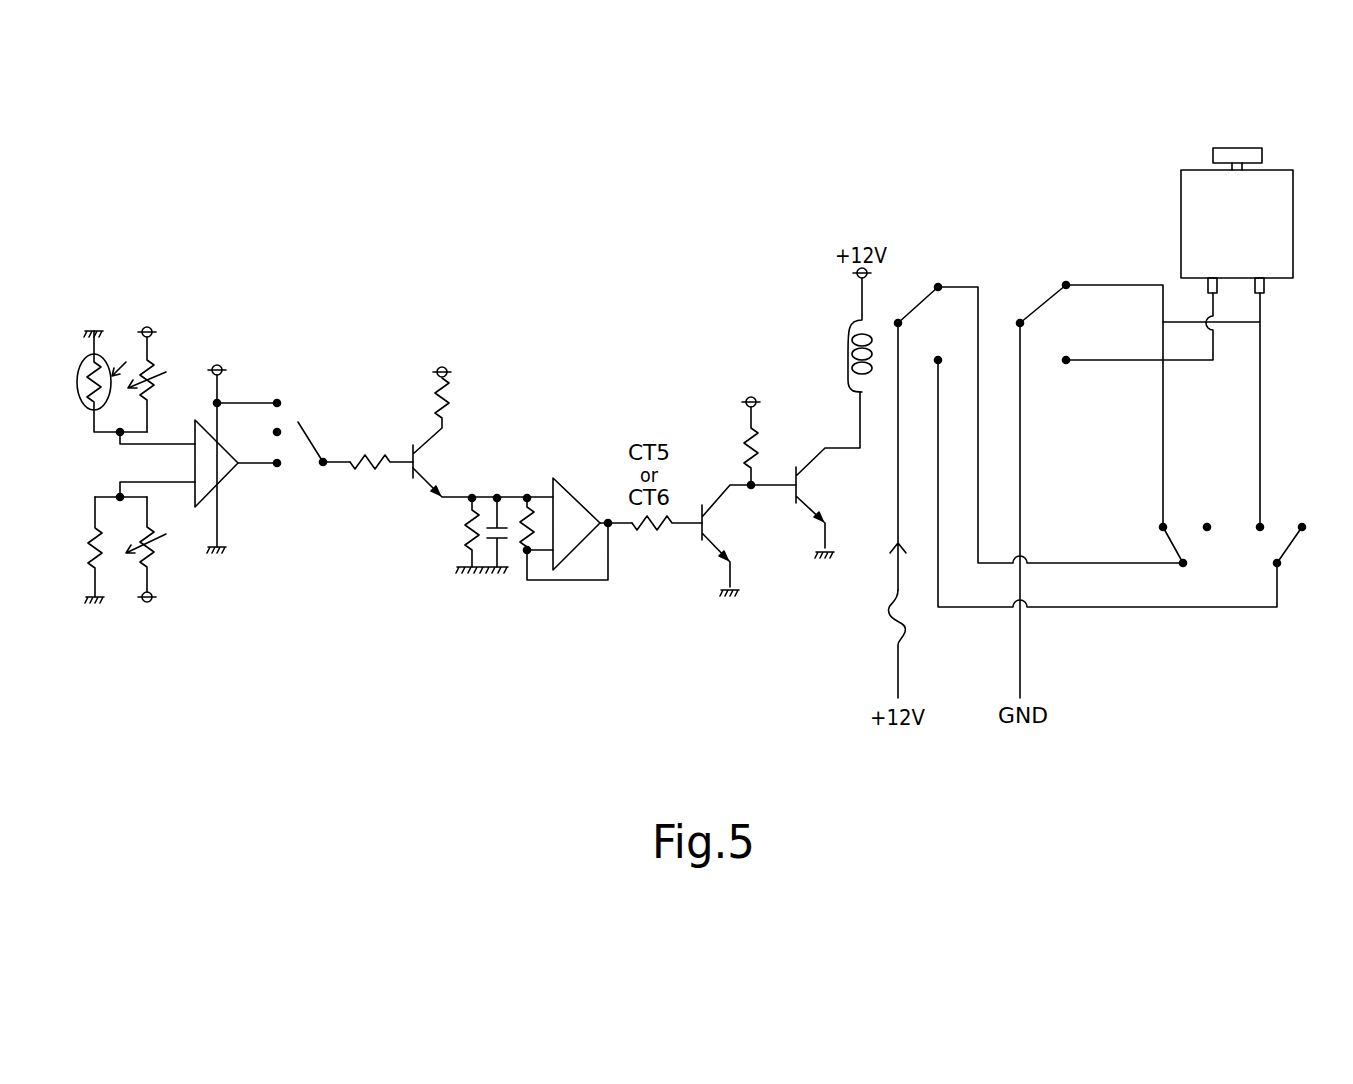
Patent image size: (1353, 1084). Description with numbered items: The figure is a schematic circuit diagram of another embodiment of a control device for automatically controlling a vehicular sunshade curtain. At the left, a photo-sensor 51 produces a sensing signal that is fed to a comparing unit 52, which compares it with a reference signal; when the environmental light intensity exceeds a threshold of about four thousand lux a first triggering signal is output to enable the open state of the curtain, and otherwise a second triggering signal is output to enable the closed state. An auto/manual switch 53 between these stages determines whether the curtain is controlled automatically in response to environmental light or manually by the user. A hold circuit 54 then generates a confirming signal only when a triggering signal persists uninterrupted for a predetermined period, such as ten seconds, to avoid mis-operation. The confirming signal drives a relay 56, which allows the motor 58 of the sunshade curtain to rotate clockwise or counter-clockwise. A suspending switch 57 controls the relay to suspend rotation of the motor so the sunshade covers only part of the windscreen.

The photo-sensor 51 is at (108, 318).
The comparing unit 52 is at (195, 408).
The auto/manual switch 53 is at (292, 410).
The hold circuit 54 is at (438, 480).
The relay 56 is at (988, 280).
The suspending switch 57 is at (1280, 520).
The motor 58 is at (1285, 205).